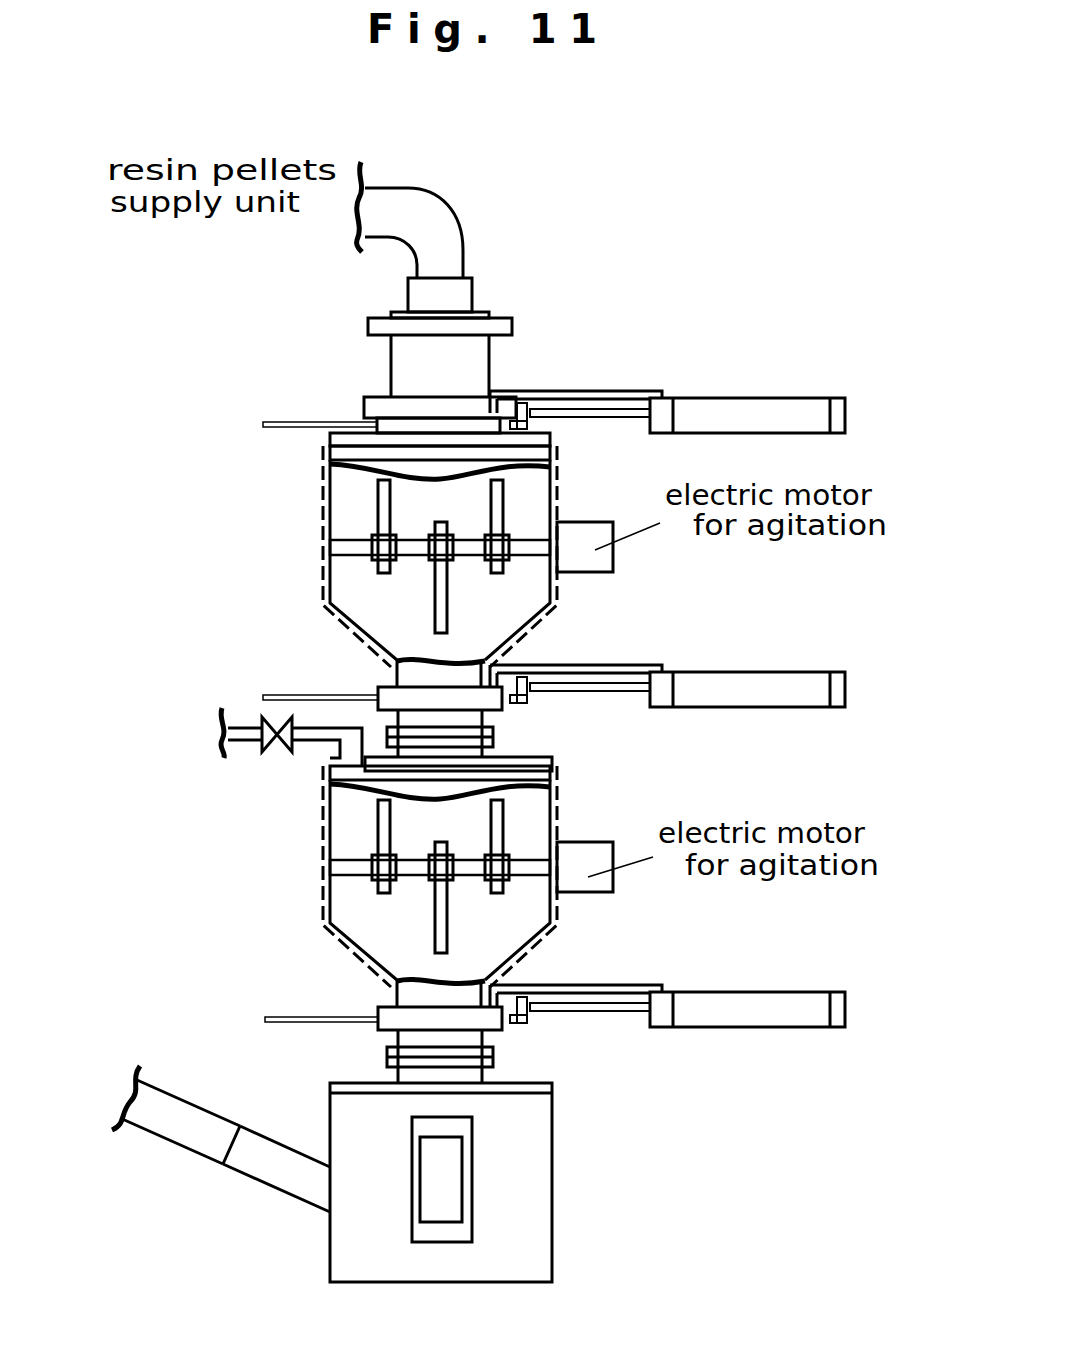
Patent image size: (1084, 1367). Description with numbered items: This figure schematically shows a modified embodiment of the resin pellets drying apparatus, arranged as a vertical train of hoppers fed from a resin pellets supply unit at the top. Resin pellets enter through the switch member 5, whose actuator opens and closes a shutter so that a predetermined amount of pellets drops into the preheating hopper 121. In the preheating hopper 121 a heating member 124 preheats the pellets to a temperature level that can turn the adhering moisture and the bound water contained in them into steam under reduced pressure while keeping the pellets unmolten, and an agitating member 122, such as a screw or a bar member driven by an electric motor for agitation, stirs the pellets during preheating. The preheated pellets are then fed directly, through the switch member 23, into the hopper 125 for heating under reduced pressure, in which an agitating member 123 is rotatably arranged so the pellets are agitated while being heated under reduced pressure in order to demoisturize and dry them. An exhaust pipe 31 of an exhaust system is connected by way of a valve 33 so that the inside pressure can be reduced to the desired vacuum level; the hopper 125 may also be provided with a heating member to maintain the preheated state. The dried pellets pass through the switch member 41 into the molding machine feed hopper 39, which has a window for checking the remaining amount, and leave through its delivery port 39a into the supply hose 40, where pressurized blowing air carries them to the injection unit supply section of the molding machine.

The switch member 5 is at (622, 390).
The preheating hopper 121 is at (327, 492).
The heating member 124 is at (322, 518).
The agitating member 122 is at (362, 556).
The switch member 23 is at (663, 672).
The exhaust pipe 31 is at (228, 728).
The valve 33 is at (262, 743).
The hopper for heating under reduced pressure 125 is at (325, 810).
The agitating member 123 is at (363, 867).
The switch member 41 is at (655, 988).
The supply hose 40 is at (168, 1113).
The delivery port 39a is at (292, 1175).
The molding machine feed hopper 39 is at (490, 1197).